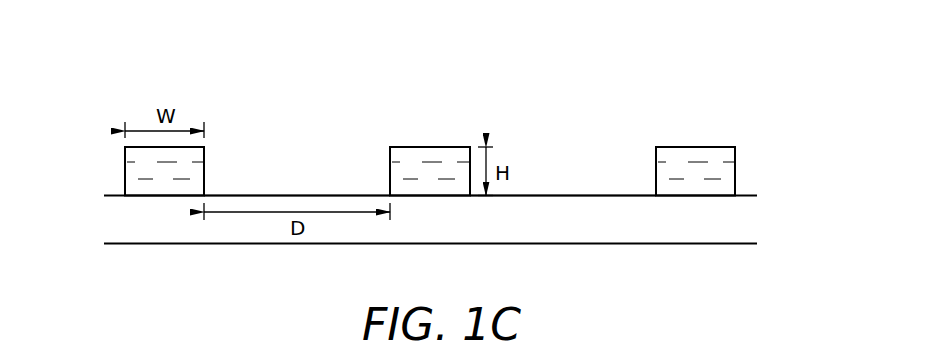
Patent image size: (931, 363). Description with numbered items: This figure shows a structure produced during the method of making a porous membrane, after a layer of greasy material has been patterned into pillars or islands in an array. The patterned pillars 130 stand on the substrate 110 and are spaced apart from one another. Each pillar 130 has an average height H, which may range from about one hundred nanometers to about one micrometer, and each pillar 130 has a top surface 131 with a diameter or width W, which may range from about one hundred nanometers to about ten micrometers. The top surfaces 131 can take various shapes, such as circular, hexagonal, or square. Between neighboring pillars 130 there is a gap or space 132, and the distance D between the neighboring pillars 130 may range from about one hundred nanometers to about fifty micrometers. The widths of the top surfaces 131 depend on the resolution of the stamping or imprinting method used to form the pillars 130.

The substrate 110 is at (735, 223).
The pillars 130 is at (137, 169).
The top surface 131 is at (405, 145).
The gap 132 is at (300, 186).